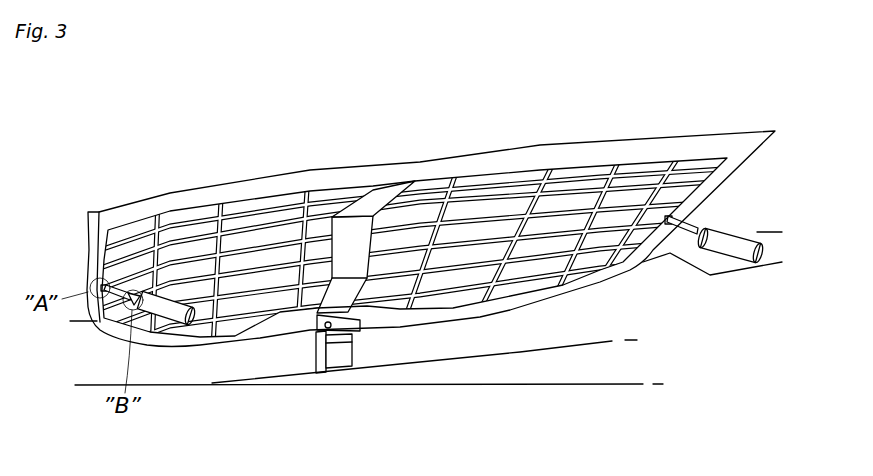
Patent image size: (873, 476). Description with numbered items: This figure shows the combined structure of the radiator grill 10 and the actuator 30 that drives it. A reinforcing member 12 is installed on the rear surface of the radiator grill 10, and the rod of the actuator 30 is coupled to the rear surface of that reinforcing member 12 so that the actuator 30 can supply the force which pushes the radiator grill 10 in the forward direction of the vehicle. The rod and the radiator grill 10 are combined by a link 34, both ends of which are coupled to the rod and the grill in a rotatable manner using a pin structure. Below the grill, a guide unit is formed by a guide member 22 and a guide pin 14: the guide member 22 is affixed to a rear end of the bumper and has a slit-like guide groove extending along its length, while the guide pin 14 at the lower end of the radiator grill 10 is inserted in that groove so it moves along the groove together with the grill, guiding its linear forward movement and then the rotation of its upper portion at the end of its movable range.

The radiator grill 10 is at (652, 173).
The reinforcing member 12 is at (700, 203).
The guide pin 14 is at (323, 330).
The guide member 22 is at (337, 352).
The actuator 30 is at (163, 315).
The link 34 is at (103, 300).